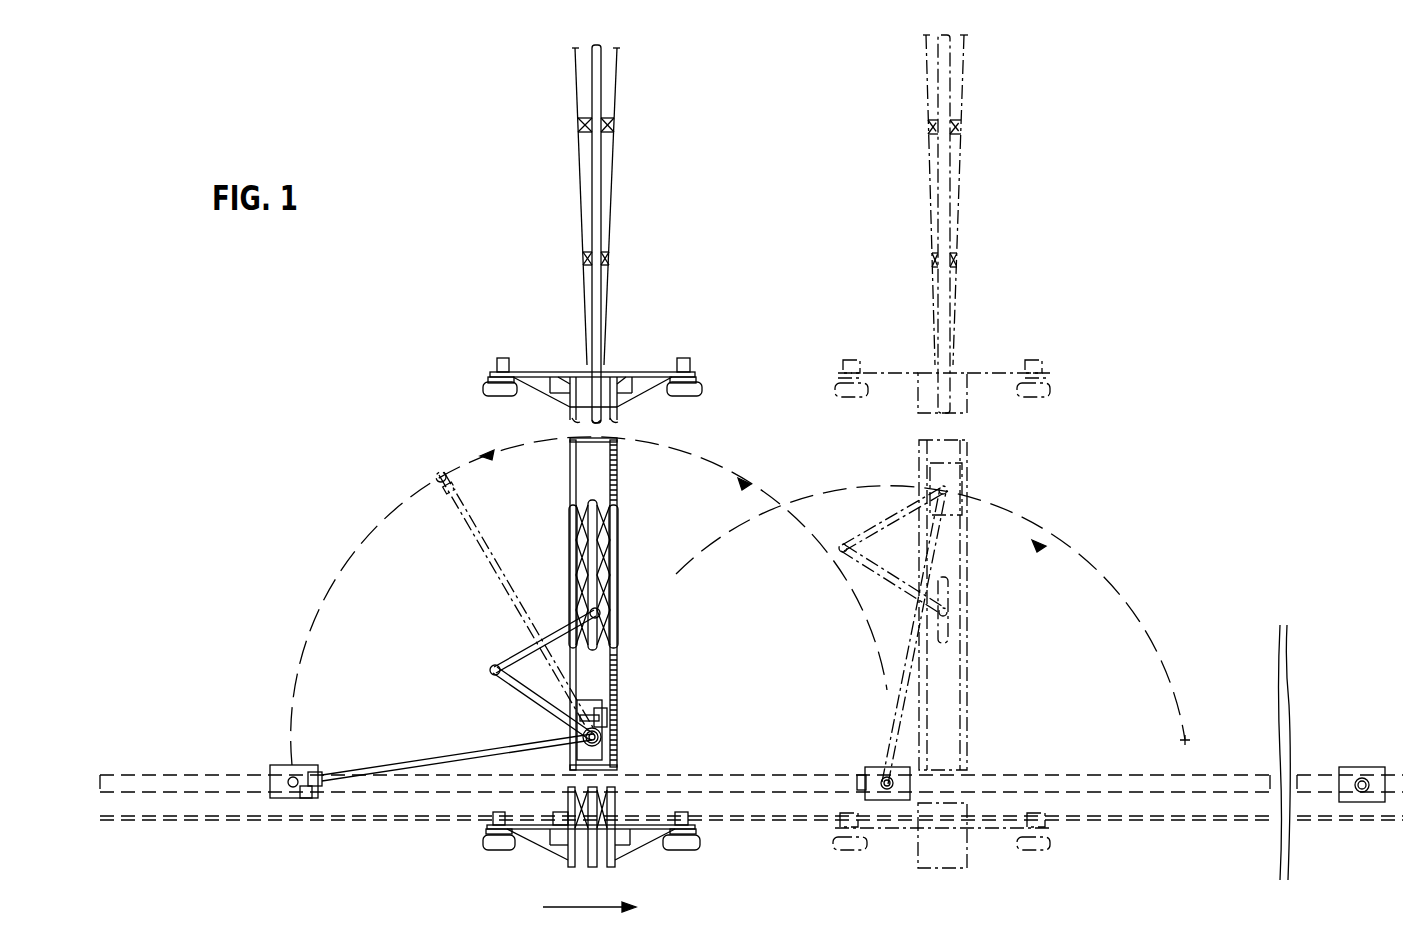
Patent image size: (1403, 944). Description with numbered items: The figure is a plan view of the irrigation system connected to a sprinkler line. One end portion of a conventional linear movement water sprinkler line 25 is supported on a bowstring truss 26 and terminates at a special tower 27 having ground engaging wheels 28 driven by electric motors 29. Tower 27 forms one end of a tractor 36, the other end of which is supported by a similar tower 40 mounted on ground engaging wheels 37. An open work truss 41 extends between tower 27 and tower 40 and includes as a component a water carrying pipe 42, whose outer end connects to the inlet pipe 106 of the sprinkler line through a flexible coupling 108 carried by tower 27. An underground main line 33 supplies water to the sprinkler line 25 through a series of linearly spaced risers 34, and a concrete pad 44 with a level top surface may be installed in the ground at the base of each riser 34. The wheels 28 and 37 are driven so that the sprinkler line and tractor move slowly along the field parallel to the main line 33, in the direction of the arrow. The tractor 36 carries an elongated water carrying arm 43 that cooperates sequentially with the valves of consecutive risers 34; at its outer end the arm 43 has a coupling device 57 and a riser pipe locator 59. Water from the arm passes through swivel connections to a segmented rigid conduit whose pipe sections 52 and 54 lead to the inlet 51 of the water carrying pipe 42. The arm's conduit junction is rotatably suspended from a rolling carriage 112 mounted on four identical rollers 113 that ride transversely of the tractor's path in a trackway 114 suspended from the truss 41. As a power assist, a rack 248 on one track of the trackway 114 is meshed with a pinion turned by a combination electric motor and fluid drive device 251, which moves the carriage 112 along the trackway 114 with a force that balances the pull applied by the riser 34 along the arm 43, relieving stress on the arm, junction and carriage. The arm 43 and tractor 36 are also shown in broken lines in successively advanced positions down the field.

The sprinkler line 25 is at (612, 332).
The bowstring truss 26 is at (576, 124).
The tower 27 is at (522, 372).
The ground engaging wheels 28 is at (484, 391).
The electric motors 29 is at (497, 361).
The inlet pipe 106 is at (598, 360).
The flexible coupling 108 is at (597, 392).
The underground main line 33 is at (1017, 782).
The riser 34 is at (304, 760).
The tractor 36 is at (622, 542).
The ground engaging wheels 37 is at (490, 848).
The tower 40 is at (660, 826).
The open work truss 41 is at (618, 636).
The water carrying pipe 42 is at (598, 512).
The water carrying arm 43 is at (476, 526).
The concrete pad 44 is at (273, 765).
The inlet 51 is at (598, 608).
The pipe section 52 is at (508, 686).
The pipe section 54 is at (550, 630).
The coupling device 57 is at (293, 790).
The riser pipe locator 59 is at (320, 796).
The rolling carriage 112 is at (565, 742).
The rollers 113 is at (560, 713).
The trackway 114 is at (600, 684).
The rack 248 is at (612, 700).
The combination electric motor and fluid drive device 251 is at (607, 739).